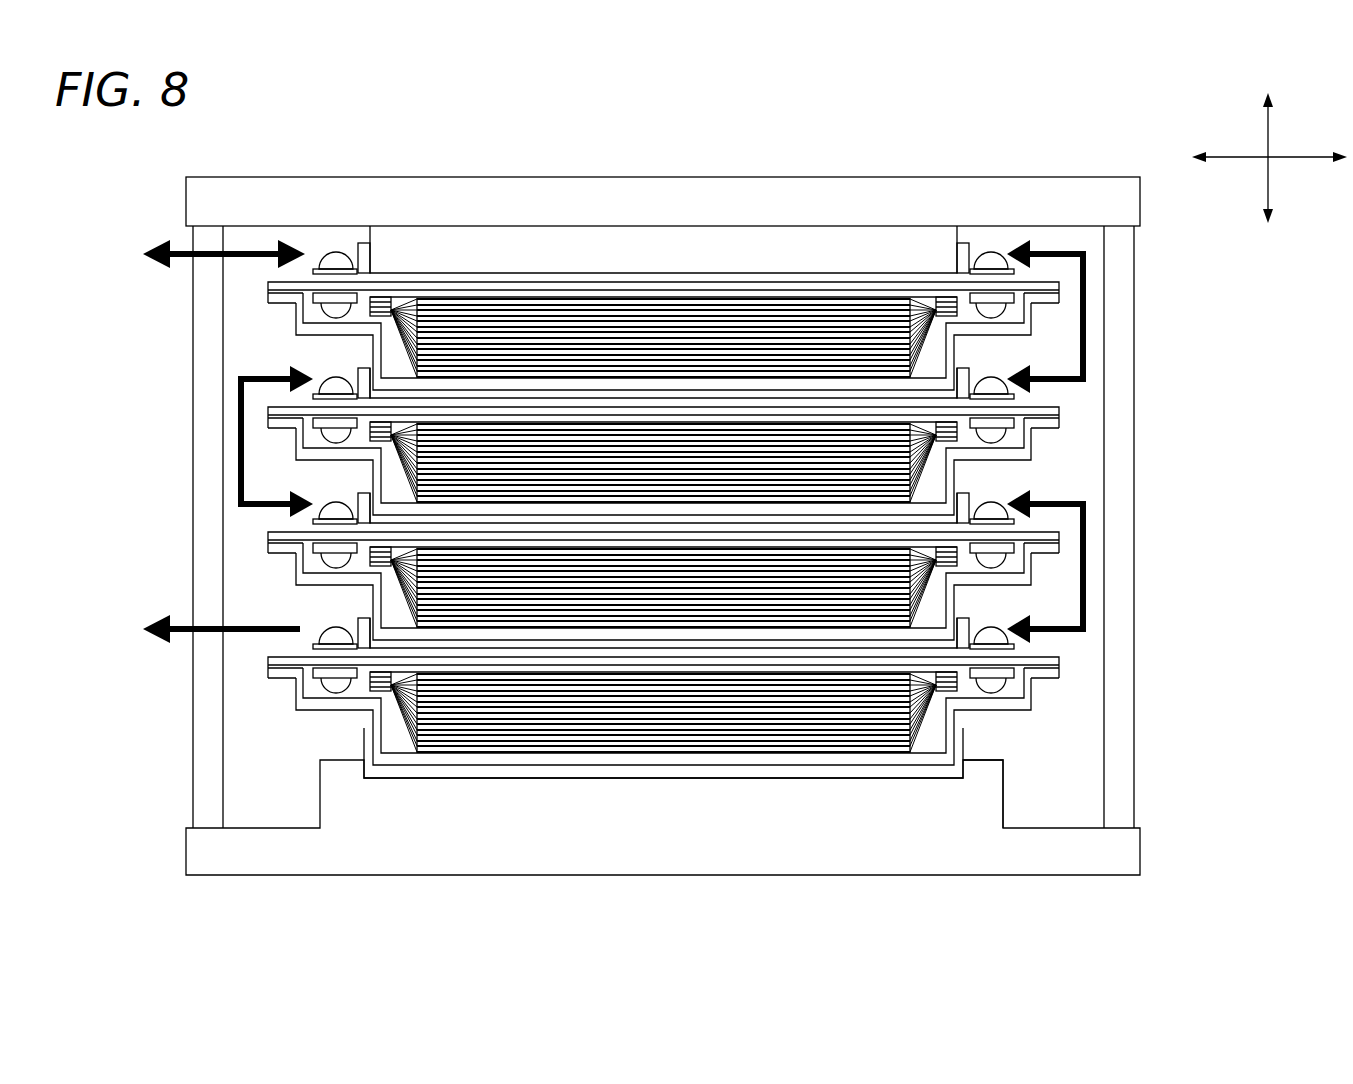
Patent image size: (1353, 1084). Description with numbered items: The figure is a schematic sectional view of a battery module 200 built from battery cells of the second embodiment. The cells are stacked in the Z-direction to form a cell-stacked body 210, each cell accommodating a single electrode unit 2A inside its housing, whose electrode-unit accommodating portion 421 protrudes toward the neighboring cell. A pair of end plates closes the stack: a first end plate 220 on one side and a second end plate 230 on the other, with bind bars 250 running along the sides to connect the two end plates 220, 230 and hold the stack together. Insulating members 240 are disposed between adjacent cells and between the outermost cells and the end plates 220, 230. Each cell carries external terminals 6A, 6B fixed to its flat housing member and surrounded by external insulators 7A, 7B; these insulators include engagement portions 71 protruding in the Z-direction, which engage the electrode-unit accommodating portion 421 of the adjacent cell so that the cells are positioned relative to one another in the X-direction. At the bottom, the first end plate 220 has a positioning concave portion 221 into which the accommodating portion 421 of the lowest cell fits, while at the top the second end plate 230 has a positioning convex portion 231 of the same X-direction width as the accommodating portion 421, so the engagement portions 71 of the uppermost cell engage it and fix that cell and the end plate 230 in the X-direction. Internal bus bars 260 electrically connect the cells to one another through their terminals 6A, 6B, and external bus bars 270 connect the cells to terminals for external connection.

The battery module 200 is at (1092, 158).
The electrode unit 2A is at (662, 560).
The cell-stacked body 210 is at (738, 318).
The first end plate 220 is at (556, 877).
The positioning concave portion 221 is at (912, 779).
The second end plate 230 is at (955, 177).
The positioning convex portion 231 is at (805, 282).
The insulating member 240 is at (515, 398).
The bind bar 250 is at (193, 460).
The internal bus bar 260 is at (240, 486).
The external bus bar 270 is at (160, 254).
The external terminal 6A is at (345, 258).
The external terminal 6B is at (990, 256).
The external insulator 7A is at (320, 265).
The external insulator 7B is at (313, 398).
The engagement portion 71 is at (398, 425).
The electrode-unit accommodating portion 421 is at (728, 779).